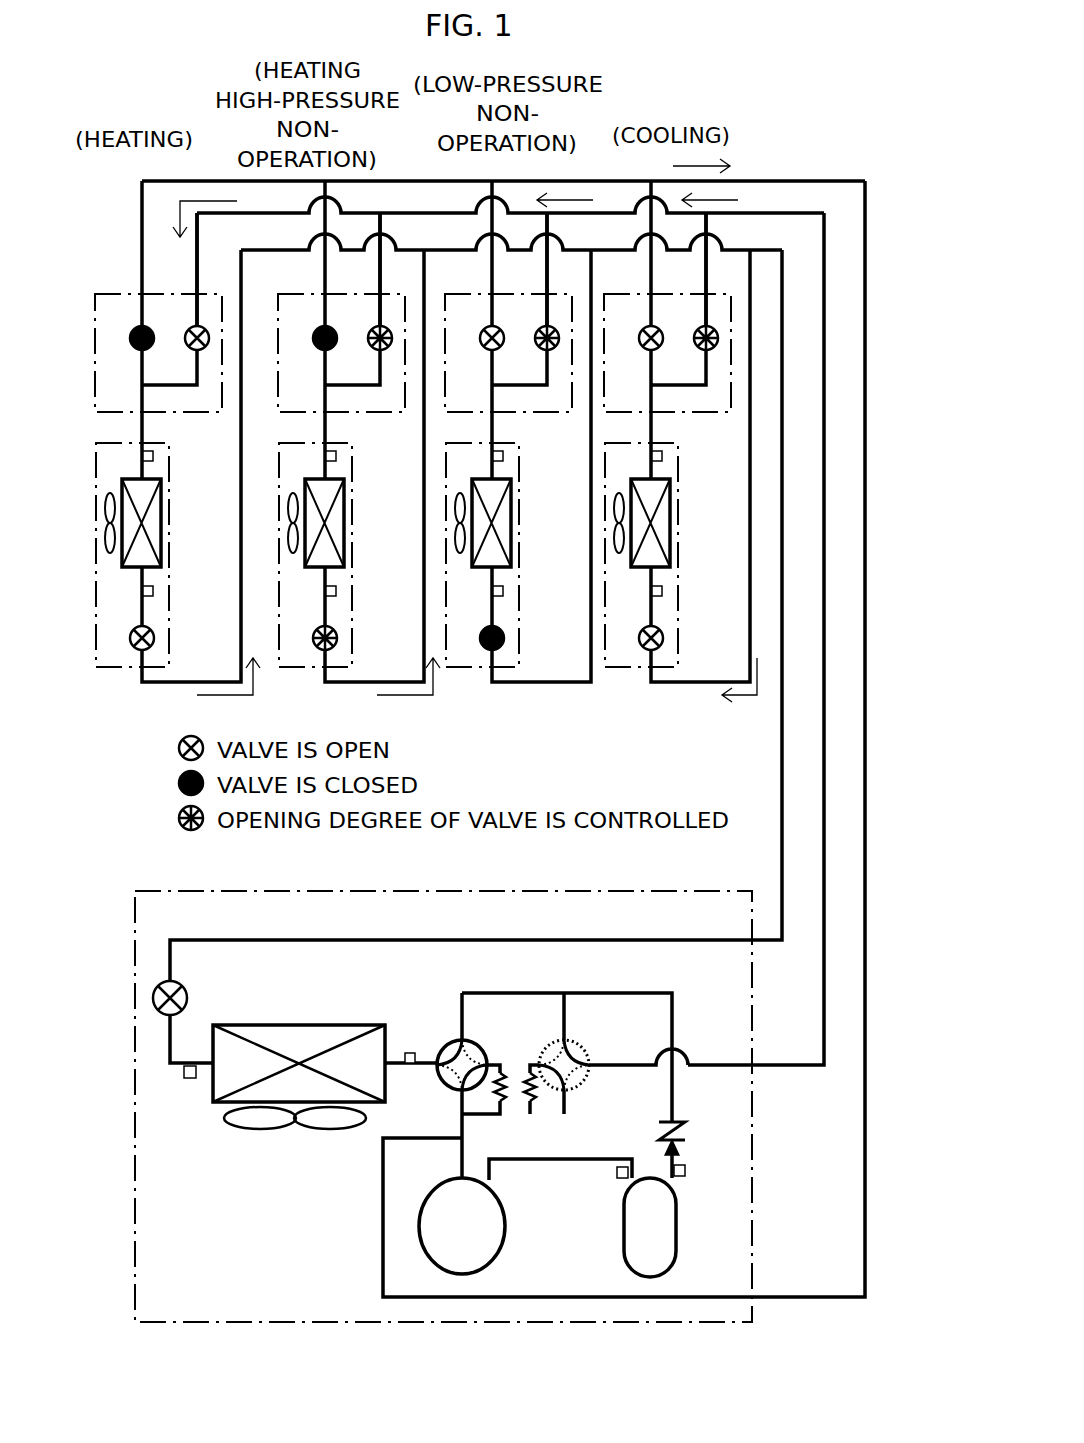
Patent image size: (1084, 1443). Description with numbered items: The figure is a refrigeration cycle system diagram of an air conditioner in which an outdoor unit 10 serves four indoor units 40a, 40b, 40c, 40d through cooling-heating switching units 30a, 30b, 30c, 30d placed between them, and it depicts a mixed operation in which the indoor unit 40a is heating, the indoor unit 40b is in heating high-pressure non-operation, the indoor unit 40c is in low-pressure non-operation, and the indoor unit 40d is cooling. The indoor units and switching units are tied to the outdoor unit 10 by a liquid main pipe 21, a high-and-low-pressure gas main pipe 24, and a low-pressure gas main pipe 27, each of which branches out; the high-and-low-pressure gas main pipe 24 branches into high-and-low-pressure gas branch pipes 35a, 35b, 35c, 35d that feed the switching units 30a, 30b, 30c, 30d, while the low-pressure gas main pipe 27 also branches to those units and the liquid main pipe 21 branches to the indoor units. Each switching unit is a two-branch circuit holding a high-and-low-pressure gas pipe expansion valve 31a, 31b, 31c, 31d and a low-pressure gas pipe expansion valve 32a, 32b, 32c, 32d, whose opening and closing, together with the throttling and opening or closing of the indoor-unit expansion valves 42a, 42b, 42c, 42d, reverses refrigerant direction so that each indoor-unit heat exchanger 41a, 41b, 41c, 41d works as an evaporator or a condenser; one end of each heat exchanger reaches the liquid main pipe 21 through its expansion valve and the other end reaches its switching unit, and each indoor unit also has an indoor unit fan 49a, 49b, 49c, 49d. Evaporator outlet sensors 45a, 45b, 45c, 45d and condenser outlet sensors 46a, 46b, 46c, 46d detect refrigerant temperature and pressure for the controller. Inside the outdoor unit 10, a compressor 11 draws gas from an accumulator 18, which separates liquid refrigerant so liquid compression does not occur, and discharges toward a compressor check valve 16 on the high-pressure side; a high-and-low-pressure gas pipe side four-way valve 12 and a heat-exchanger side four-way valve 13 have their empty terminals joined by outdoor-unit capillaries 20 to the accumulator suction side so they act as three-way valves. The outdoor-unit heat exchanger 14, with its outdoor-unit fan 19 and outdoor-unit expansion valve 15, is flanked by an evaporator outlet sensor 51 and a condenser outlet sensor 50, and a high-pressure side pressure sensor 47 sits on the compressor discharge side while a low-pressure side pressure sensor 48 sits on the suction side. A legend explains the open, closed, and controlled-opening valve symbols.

The outdoor unit 10 is at (135, 1090).
The compressor 11 is at (677, 1230).
The high-and-low-pressure gas pipe side four-way valve 12 is at (580, 1045).
The heat-exchanger side four-way valve 13 is at (445, 1040).
The outdoor-unit heat exchanger 14 is at (293, 1025).
The outdoor-unit expansion valve 15 is at (152, 1000).
The compressor check valve 16 is at (690, 1133).
The accumulator 18 is at (470, 1258).
The outdoor-unit fan 19 is at (260, 1130).
The outdoor-unit capillaries 20 is at (527, 1070).
The liquid main pipe 21 is at (782, 516).
The high-and-low-pressure gas main pipe 24 is at (824, 573).
The low-pressure gas main pipe 27 is at (865, 640).
The cooling-heating switching unit 30a is at (145, 293).
The cooling-heating switching unit 30b is at (341, 334).
The cooling-heating switching unit 30c is at (508, 334).
The cooling-heating switching unit 30d is at (667, 334).
The high-and-low-pressure gas pipe expansion valve 31a is at (200, 351).
The high-and-low-pressure gas pipe expansion valve 31b is at (394, 384).
The high-and-low-pressure gas pipe expansion valve 31c is at (560, 384).
The high-and-low-pressure gas pipe expansion valve 31d is at (720, 384).
The low-pressure gas pipe expansion valve 32a is at (137, 352).
The low-pressure gas pipe expansion valve 32b is at (310, 365).
The low-pressure gas pipe expansion valve 32c is at (477, 365).
The low-pressure gas pipe expansion valve 32d is at (636, 365).
The high-and-low-pressure gas branch pipe 35a is at (199, 222).
The high-and-low-pressure gas branch pipe 35b is at (415, 269).
The high-and-low-pressure gas branch pipe 35c is at (581, 269).
The high-and-low-pressure gas branch pipe 35d is at (741, 269).
The indoor unit 40a is at (169, 523).
The indoor unit 40b is at (344, 555).
The indoor unit 40c is at (510, 555).
The indoor unit 40d is at (670, 555).
The indoor-unit heat exchanger 41a is at (161, 505).
The indoor-unit heat exchanger 41b is at (357, 523).
The indoor-unit heat exchanger 41c is at (523, 523).
The indoor-unit heat exchanger 41d is at (683, 523).
The indoor-unit expansion valve 42a is at (154, 640).
The indoor-unit expansion valve 42b is at (363, 643).
The indoor-unit expansion valve 42c is at (529, 643).
The indoor-unit expansion valve 42d is at (689, 643).
The evaporator outlet sensor 45a is at (153, 456).
The evaporator outlet sensor 45b is at (369, 463).
The evaporator outlet sensor 45c is at (535, 463).
The evaporator outlet sensor 45d is at (695, 463).
The condenser outlet sensor 46a is at (153, 591).
The condenser outlet sensor 46b is at (369, 604).
The condenser outlet sensor 46c is at (535, 604).
The condenser outlet sensor 46d is at (695, 604).
The high-pressure side pressure sensor 47 is at (685, 1170).
The low-pressure side pressure sensor 48 is at (617, 1173).
The indoor unit fan 49a is at (110, 553).
The indoor unit fan 49b is at (300, 557).
The indoor unit fan 49c is at (466, 557).
The indoor unit fan 49d is at (626, 557).
The condenser outlet sensor 50 is at (190, 1078).
The evaporator outlet sensor 51 is at (410, 1052).